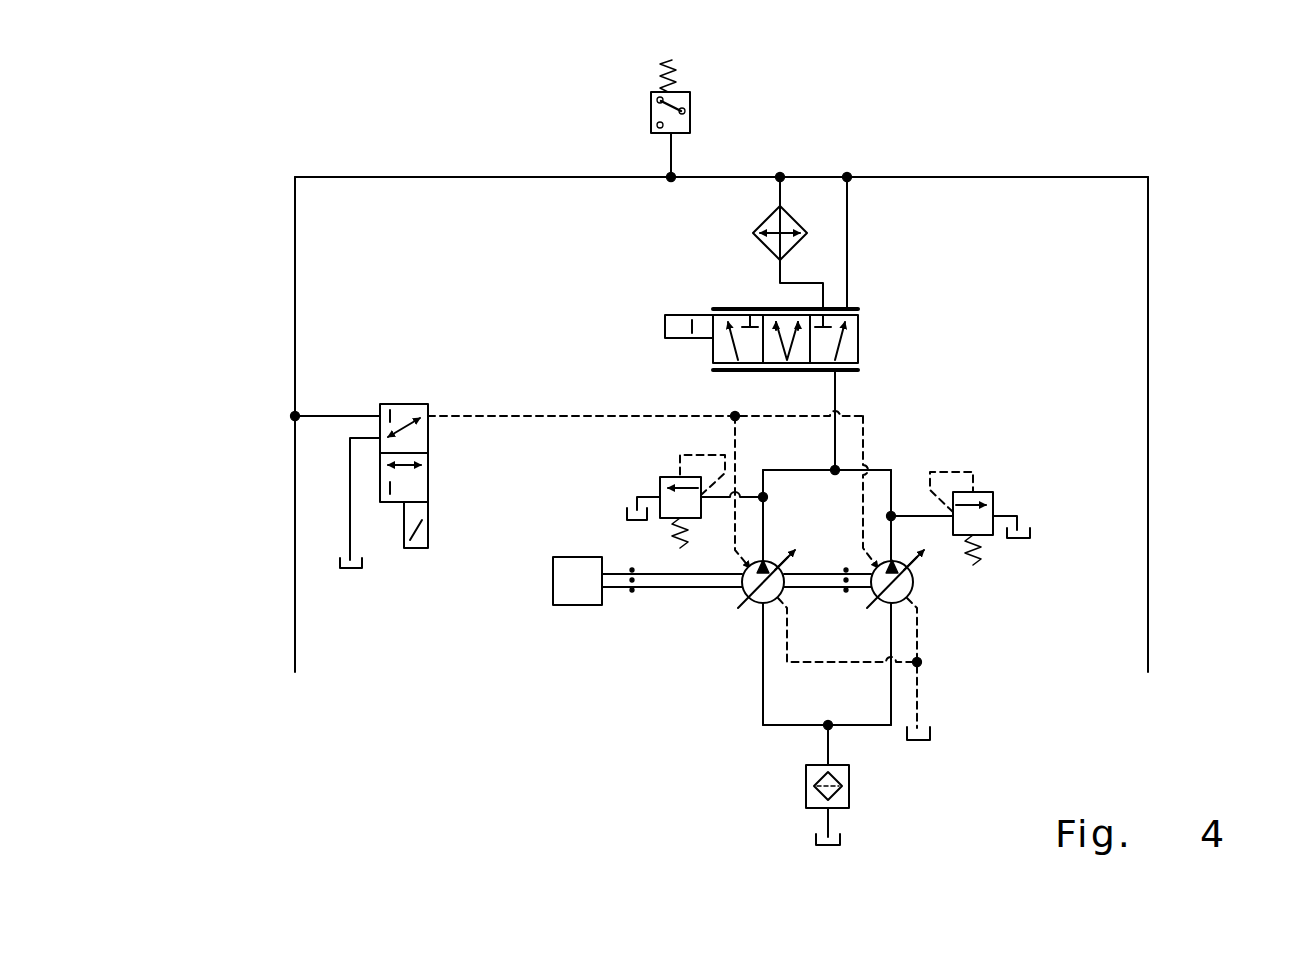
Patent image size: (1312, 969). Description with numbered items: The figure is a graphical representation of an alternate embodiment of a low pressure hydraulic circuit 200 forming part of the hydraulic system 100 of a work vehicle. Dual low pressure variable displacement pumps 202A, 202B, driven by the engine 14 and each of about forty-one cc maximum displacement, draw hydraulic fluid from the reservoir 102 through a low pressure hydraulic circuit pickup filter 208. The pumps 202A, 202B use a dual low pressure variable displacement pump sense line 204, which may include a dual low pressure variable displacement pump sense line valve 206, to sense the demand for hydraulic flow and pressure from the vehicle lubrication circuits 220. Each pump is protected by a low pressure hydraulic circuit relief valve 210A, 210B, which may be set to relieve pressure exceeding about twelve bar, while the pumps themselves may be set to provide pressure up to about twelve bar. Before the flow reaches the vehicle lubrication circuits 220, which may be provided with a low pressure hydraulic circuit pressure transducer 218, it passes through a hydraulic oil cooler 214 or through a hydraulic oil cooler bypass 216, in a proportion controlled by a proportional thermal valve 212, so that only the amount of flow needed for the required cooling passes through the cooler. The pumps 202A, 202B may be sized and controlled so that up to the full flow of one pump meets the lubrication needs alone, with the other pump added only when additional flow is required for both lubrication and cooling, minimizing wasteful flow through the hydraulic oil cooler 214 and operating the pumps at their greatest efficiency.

The low pressure hydraulic circuit 200 is at (1013, 155).
The hydraulic system 100 is at (1180, 225).
The vehicle lubrication circuits 220 is at (295, 615).
The low pressure hydraulic circuit pressure transducer 218 is at (651, 108).
The hydraulic oil cooler bypass 216 is at (848, 242).
The hydraulic oil cooler 214 is at (762, 247).
The proportional thermal valve 212 is at (858, 336).
The dual low pressure variable displacement pump sense line 204 is at (530, 415).
The dual low pressure variable displacement pump sense line valve 206 is at (428, 483).
The low pressure hydraulic circuit relief valve 210A is at (668, 477).
The low pressure hydraulic circuit relief valve 210B is at (985, 492).
The engine 14 is at (578, 605).
The low pressure variable displacement pump 202A is at (757, 605).
The low pressure variable displacement pump 202B is at (915, 590).
The low pressure hydraulic circuit pickup filter 208 is at (806, 795).
The reservoir 102 is at (815, 845).